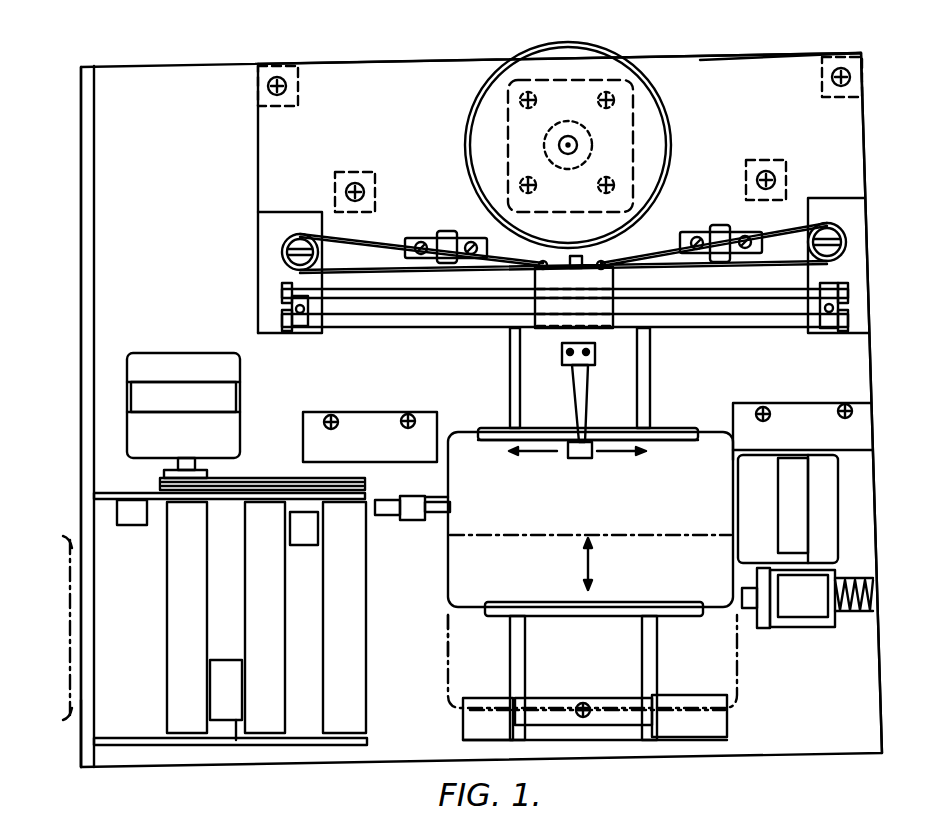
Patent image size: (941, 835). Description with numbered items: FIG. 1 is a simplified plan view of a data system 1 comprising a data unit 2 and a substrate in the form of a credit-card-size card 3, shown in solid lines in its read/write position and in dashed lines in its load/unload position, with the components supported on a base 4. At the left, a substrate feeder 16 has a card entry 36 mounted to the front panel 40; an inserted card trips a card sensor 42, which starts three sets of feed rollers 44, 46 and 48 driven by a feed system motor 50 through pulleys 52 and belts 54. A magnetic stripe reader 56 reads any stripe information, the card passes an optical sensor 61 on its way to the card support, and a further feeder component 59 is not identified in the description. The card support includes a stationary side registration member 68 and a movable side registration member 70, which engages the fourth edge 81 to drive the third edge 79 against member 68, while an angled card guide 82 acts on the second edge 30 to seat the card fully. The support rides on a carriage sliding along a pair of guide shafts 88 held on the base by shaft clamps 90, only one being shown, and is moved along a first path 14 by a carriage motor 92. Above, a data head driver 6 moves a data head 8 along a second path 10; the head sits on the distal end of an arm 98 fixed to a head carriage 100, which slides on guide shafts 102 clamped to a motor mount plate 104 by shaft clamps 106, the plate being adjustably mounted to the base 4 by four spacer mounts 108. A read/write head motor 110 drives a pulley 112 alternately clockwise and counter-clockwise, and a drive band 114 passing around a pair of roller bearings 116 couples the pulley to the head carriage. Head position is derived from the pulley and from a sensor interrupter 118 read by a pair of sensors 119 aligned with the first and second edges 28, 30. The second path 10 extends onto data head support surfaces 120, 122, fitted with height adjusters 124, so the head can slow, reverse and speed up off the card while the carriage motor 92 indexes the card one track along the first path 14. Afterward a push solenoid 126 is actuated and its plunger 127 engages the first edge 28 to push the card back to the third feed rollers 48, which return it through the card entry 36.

The data system 1 is at (908, 34).
The data unit 2 is at (777, 52).
The card 3 is at (477, 430).
The base 4 is at (218, 65).
The data head driver 6 is at (735, 99).
The data head 8 is at (565, 456).
The second path 10 is at (607, 456).
The first path 14 is at (606, 564).
The substrate feeder 16 is at (76, 770).
The first edge 28 is at (734, 446).
The second edge 30 is at (452, 521).
The card entry 36 is at (70, 540).
The front panel 40 is at (97, 216).
The card sensor 42 is at (130, 527).
The feed rollers 44 is at (185, 576).
The feed rollers 46 is at (263, 578).
The third feed rollers 48 is at (340, 735).
The feed system motor 50 is at (182, 352).
The pulleys 52 is at (340, 478).
The belts 54 is at (160, 481).
The magnetic stripe reader 56 is at (236, 745).
The clamp block 59 is at (312, 546).
The optical sensor 61 is at (396, 522).
The stationary side registration member 68 is at (690, 428).
The movable side registration member 70 is at (668, 603).
The third edge 79 is at (715, 430).
The fourth edge 81 is at (447, 630).
The angled card guide 82 is at (430, 497).
The guide shafts 88 is at (510, 350).
The shaft clamps 90 is at (562, 710).
The carriage motor 92 is at (830, 492).
The arm 98 is at (583, 385).
The head carriage 100 is at (560, 332).
The guide shafts 102 is at (331, 300).
The motor mount plate 104 is at (258, 168).
The shaft clamps 106 is at (300, 328).
The spacer mounts 108 is at (300, 100).
The read/write head motor 110 is at (660, 106).
The pulley 112 is at (655, 143).
The drive band 114 is at (385, 240).
The roller bearings 116 is at (283, 258).
The sensor interrupter 118 is at (612, 250).
The sensors 119 is at (441, 232).
The data head support surface 120 is at (378, 420).
The data head support surface 122 is at (812, 410).
The height adjusters 124 is at (330, 414).
The push solenoid 126 is at (805, 606).
The plunger 127 is at (752, 628).